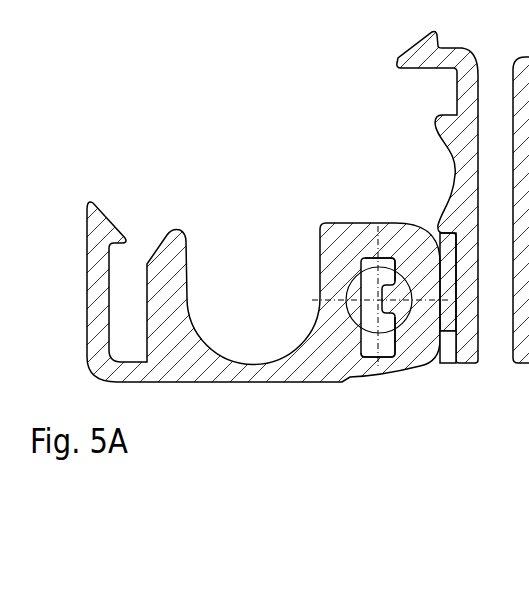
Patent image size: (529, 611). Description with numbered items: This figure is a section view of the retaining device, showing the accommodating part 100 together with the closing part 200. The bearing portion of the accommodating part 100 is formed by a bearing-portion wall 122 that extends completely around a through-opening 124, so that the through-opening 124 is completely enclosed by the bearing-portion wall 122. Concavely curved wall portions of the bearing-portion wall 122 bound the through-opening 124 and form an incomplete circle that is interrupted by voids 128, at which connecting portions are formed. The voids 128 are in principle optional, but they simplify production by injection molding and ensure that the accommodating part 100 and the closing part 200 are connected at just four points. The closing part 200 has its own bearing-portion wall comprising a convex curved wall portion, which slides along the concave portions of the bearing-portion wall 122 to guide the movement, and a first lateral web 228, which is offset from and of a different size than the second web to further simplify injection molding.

The accommodating part 100 is at (182, 391).
The closing part 200 is at (421, 118).
The bearing-portion wall 122 is at (377, 362).
The through-opening 124 is at (395, 295).
The voids 128 is at (368, 348).
The first lateral web 228 is at (445, 362).